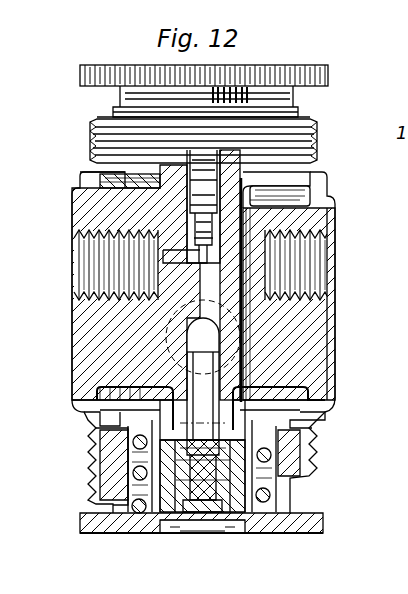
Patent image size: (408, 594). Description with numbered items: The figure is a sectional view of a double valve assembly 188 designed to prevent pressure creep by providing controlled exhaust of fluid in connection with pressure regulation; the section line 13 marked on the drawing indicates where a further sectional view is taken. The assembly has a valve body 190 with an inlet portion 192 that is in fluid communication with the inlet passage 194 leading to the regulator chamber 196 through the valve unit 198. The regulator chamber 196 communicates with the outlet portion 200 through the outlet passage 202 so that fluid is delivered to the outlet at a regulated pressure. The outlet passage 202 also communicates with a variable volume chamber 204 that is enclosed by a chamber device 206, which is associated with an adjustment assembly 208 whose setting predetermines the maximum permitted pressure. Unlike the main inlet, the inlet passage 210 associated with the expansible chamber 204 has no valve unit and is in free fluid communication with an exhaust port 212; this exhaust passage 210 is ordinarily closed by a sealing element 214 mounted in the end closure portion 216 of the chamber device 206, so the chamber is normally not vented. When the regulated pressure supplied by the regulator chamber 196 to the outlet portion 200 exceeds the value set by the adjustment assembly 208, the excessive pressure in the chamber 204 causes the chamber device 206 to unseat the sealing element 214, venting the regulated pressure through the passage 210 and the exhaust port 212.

The section line 13- 13 is at (42, 291).
The double valve assembly 188 is at (63, 184).
The valve body 190 is at (85, 344).
The inlet portion 192 is at (92, 285).
The inlet passage 194 is at (196, 240).
The regulator chamber 196 is at (296, 203).
The valve unit 198 is at (232, 166).
The outlet portion 200 is at (313, 282).
The outlet passage 202 is at (250, 340).
The variable volume chamber 204 is at (336, 400).
The chamber device 206 is at (133, 532).
The adjustment assembly 208 is at (295, 541).
The inlet passage 210 is at (193, 368).
The exhaust port 212 is at (196, 339).
The sealing element 214 is at (177, 530).
The end closure portion 216 is at (212, 532).